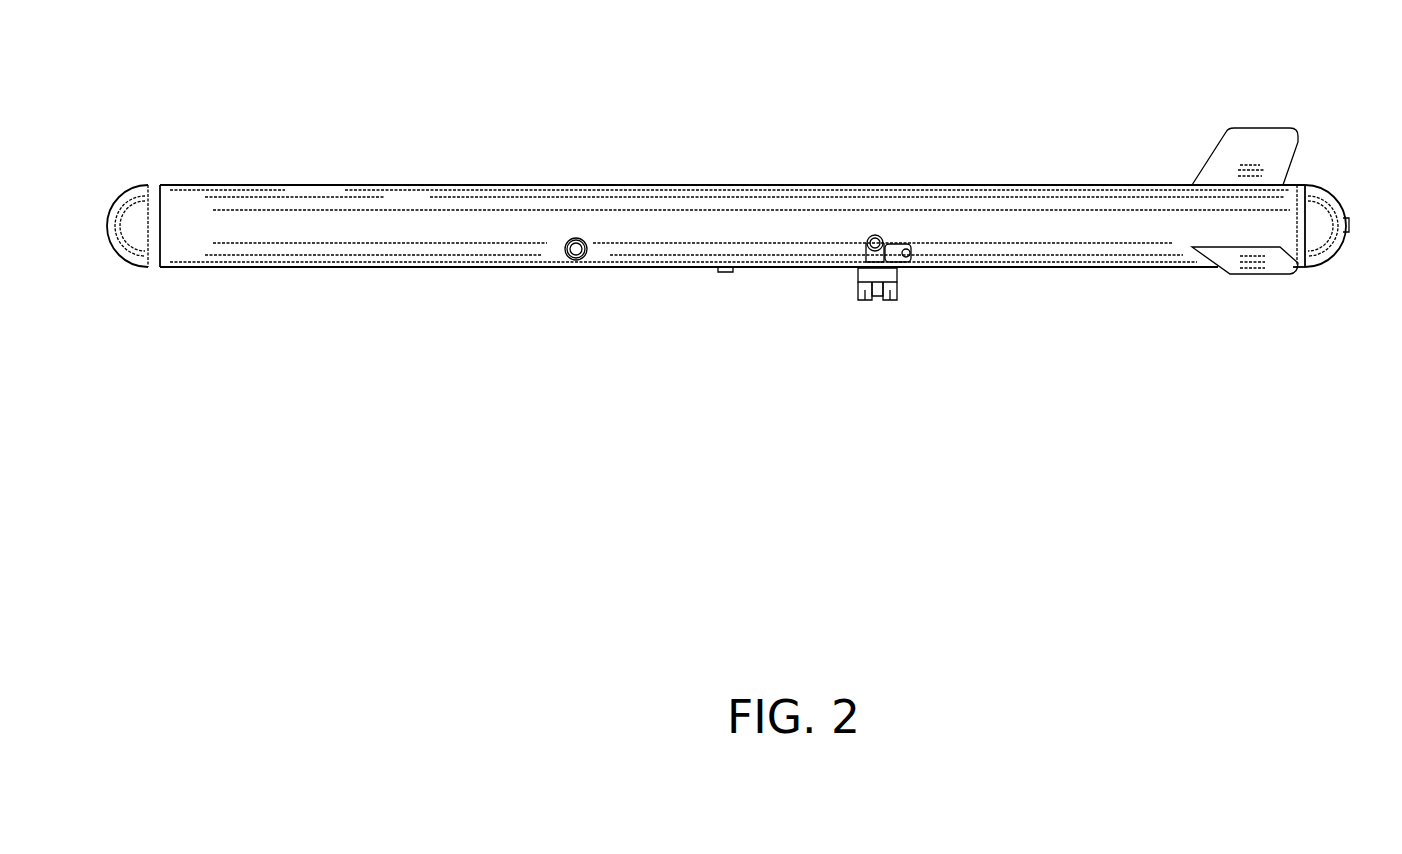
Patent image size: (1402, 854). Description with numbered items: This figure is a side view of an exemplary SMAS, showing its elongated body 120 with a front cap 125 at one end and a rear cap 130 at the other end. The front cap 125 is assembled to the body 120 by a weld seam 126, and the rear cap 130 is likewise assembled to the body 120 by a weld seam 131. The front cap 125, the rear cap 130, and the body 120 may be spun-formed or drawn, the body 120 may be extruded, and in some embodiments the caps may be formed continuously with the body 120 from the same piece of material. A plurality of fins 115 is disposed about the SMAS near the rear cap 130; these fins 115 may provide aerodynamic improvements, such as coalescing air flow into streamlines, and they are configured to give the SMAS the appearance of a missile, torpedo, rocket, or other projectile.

The fins 115 is at (1237, 128).
The body 120 is at (490, 185).
The front cap 125 is at (130, 188).
The weld seam 126 is at (152, 268).
The rear cap 130 is at (1342, 205).
The weld seam 131 is at (1304, 266).